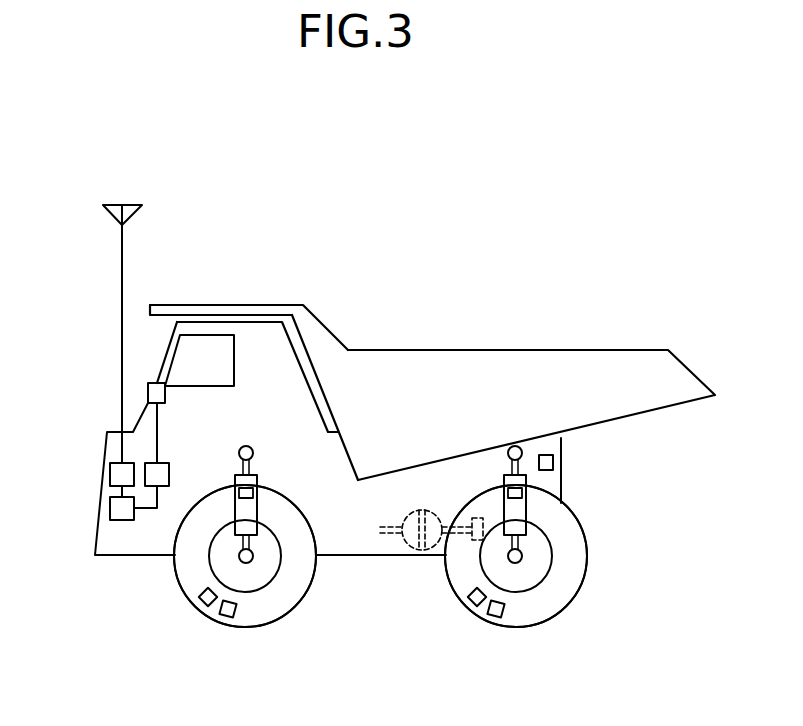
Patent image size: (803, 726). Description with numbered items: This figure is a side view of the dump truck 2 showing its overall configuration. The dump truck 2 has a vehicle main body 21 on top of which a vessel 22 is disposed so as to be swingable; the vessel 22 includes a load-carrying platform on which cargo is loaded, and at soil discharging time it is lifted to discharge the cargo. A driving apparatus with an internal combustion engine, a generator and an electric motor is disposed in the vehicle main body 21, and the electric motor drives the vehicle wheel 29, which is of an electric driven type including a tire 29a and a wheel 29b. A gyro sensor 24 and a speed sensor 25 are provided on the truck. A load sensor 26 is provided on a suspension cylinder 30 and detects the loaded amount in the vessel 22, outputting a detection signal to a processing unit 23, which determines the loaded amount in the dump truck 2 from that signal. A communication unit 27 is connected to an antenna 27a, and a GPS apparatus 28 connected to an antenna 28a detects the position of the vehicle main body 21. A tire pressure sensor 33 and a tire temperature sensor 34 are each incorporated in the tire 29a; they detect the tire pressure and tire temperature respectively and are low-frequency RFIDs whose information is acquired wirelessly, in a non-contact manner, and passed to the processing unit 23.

The dump truck 2 is at (549, 176).
The vehicle main body 21 is at (562, 438).
The vessel 22 is at (410, 350).
The processing unit 23 is at (110, 505).
The gyro sensor 24 is at (553, 462).
The speed sensor 25 is at (480, 540).
The load sensor 26 is at (241, 447).
The communication unit 27 is at (110, 473).
The antenna 27a is at (131, 205).
The GPS apparatus 28 is at (167, 487).
The antenna 28a is at (148, 387).
The vehicle wheel 29 is at (252, 628).
The tire 29a is at (282, 603).
The wheel 29b is at (268, 560).
The suspension cylinder 30 is at (258, 517).
The tire pressure sensor 33 is at (205, 608).
The tire temperature sensor 34 is at (227, 617).